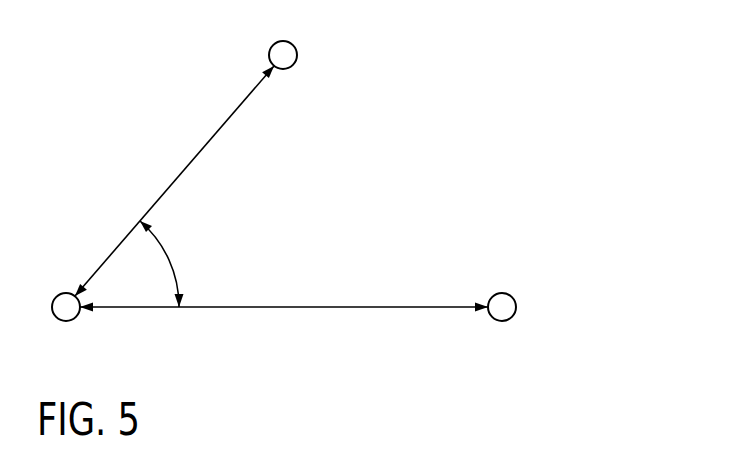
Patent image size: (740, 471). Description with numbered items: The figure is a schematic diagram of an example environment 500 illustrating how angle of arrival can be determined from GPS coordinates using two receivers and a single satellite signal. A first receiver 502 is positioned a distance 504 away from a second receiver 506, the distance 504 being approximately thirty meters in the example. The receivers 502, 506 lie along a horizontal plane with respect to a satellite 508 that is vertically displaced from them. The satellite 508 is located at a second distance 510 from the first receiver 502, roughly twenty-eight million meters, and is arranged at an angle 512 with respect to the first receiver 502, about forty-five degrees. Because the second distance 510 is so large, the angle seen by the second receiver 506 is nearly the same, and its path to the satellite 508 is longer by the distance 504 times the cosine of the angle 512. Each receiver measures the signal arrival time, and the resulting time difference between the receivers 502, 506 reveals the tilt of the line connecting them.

The environment 500 is at (544, 88).
The first receiver 502 is at (66, 321).
The distance 504 is at (283, 305).
The second receiver 506 is at (502, 321).
The satellite 508 is at (283, 41).
The second distance 510 is at (175, 180).
The angle 512 is at (170, 258).